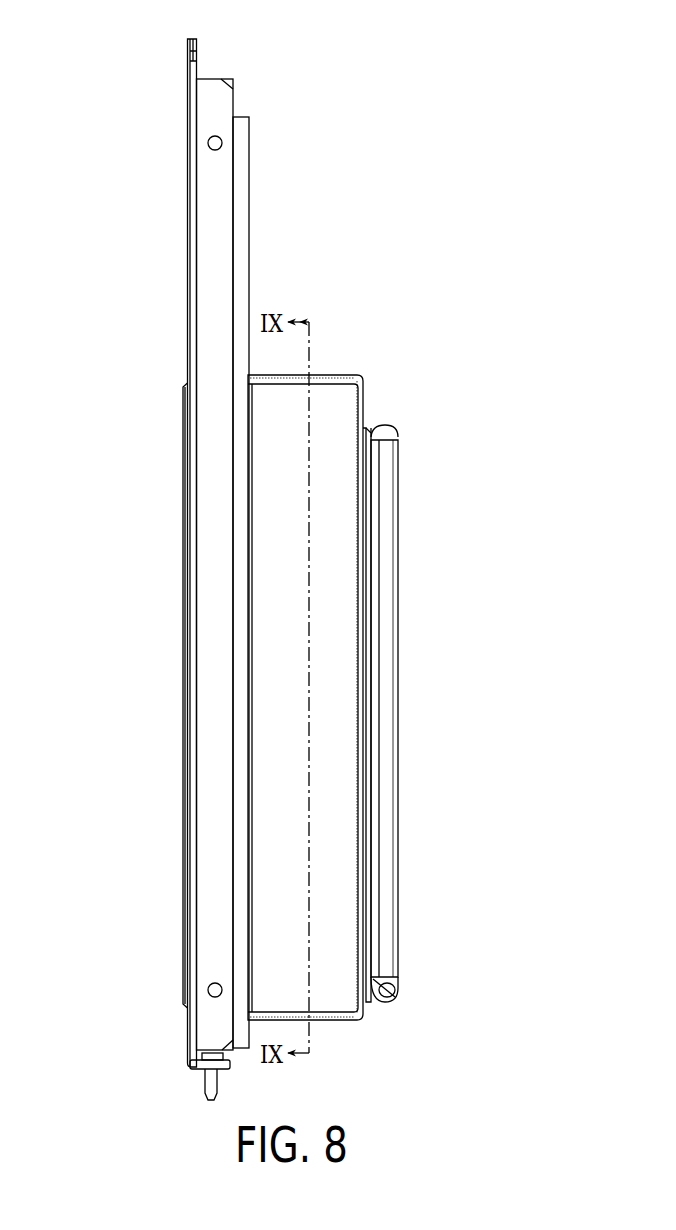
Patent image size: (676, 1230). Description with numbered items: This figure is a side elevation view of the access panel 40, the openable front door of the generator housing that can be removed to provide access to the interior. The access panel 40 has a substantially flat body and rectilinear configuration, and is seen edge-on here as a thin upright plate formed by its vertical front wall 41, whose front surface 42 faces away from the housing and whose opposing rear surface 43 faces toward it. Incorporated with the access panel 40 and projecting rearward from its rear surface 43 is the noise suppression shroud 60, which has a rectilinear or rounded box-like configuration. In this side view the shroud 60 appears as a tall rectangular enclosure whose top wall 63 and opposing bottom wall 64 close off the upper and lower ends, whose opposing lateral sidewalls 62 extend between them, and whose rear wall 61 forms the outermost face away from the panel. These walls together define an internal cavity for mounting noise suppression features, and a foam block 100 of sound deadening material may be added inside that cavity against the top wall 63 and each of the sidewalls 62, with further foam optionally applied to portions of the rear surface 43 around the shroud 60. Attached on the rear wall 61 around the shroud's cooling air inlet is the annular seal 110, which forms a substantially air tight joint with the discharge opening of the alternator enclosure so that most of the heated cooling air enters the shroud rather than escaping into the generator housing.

The access panel 40 is at (158, 72).
The front wall 41 is at (187, 125).
The front surface 42 is at (190, 208).
The rear surface 43 is at (200, 65).
The foam block 100 is at (249, 175).
The noise suppression shroud 60 is at (367, 358).
The rear wall 61 is at (365, 401).
The lateral sidewalls 62 is at (338, 674).
The top wall 63 is at (337, 373).
The bottom wall 64 is at (343, 1022).
The annular seal 110 is at (392, 502).